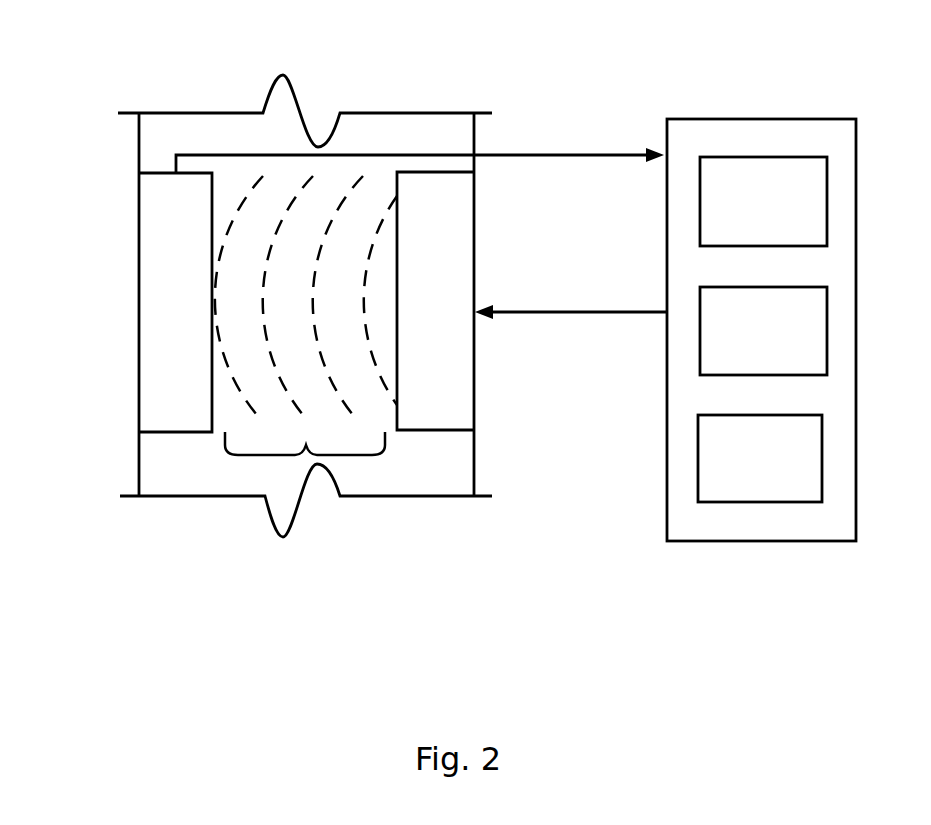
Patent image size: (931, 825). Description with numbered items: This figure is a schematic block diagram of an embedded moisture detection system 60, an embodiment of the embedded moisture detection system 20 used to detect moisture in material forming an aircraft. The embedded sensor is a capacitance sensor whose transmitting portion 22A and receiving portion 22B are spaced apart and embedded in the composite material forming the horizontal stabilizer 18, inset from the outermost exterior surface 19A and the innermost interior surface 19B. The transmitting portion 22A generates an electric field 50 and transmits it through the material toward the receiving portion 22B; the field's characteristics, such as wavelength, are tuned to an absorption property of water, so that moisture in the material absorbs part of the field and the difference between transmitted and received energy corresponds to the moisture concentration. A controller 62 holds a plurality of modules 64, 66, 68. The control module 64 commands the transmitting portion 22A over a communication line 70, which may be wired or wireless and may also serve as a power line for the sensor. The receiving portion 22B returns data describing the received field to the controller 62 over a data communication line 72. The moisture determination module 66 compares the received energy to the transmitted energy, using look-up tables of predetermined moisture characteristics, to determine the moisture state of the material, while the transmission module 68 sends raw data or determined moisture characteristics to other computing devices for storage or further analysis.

The horizontal stabilizer 18 is at (157, 132).
The outermost exterior surface 19A is at (474, 135).
The innermost interior surface 19B is at (138, 140).
The embedded moisture detection system 20 is at (85, 258).
The transmitting portion 22A is at (458, 414).
The receiving portion 22B is at (153, 404).
The electric field 50 is at (300, 448).
The embedded moisture detection system 60 is at (629, 78).
The controller 62 is at (748, 149).
The control module 64 is at (748, 211).
The moisture determination module 66 is at (748, 339).
The transmission module 68 is at (747, 473).
The communication line 70 is at (616, 313).
The data communication line 72 is at (538, 158).